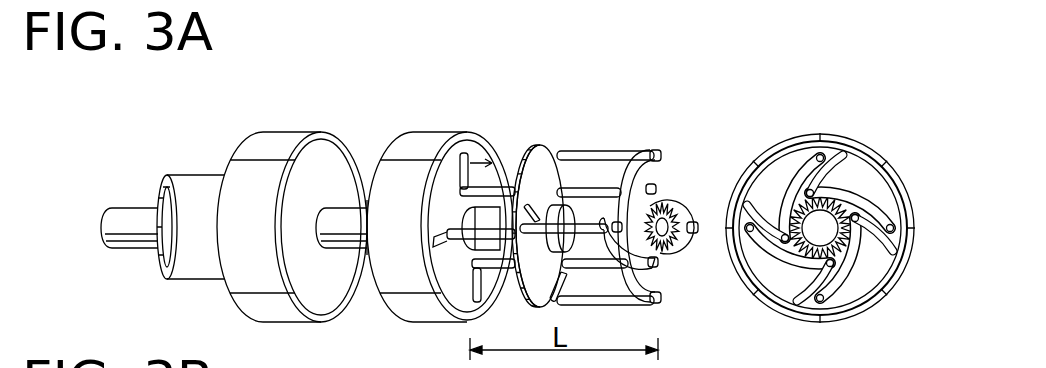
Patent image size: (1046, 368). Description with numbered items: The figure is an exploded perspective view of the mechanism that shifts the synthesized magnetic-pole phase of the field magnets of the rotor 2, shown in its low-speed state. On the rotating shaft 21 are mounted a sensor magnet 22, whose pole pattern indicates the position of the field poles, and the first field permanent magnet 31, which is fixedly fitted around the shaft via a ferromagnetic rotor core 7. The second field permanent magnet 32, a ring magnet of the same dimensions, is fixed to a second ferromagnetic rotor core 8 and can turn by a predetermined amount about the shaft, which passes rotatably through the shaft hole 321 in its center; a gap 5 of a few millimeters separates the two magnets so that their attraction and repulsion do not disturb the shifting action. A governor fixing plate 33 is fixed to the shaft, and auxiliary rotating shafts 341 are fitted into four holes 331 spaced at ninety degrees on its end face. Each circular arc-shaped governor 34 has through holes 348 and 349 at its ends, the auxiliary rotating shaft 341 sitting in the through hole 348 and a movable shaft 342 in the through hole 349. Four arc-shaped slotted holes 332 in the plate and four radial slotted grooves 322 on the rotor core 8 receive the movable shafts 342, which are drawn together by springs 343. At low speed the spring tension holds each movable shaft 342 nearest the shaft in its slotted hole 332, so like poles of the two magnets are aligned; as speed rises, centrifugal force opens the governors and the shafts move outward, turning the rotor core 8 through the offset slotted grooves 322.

The rotor 2 is at (338, 116).
The gap 5 is at (367, 160).
The ferromagnetic rotor core 7 is at (327, 290).
The ferromagnetic rotor core 8 is at (462, 300).
The rotating shaft 21 is at (118, 237).
The sensor magnet 22 is at (186, 276).
The first field permanent magnet 31 is at (292, 250).
The second field permanent magnet 32 is at (446, 204).
The governor fixing plate 33 is at (535, 178).
The governor 34 is at (810, 248).
The shaft hole 321 is at (470, 206).
The slotted groove 322 is at (468, 152).
The hole 331 is at (563, 189).
The slotted hole 332 is at (603, 221).
The auxiliary rotating shaft 341 is at (612, 153).
The movable shaft 342 is at (651, 185).
The spring 343 is at (787, 253).
The through hole 348 is at (658, 150).
The through hole 349 is at (617, 269).